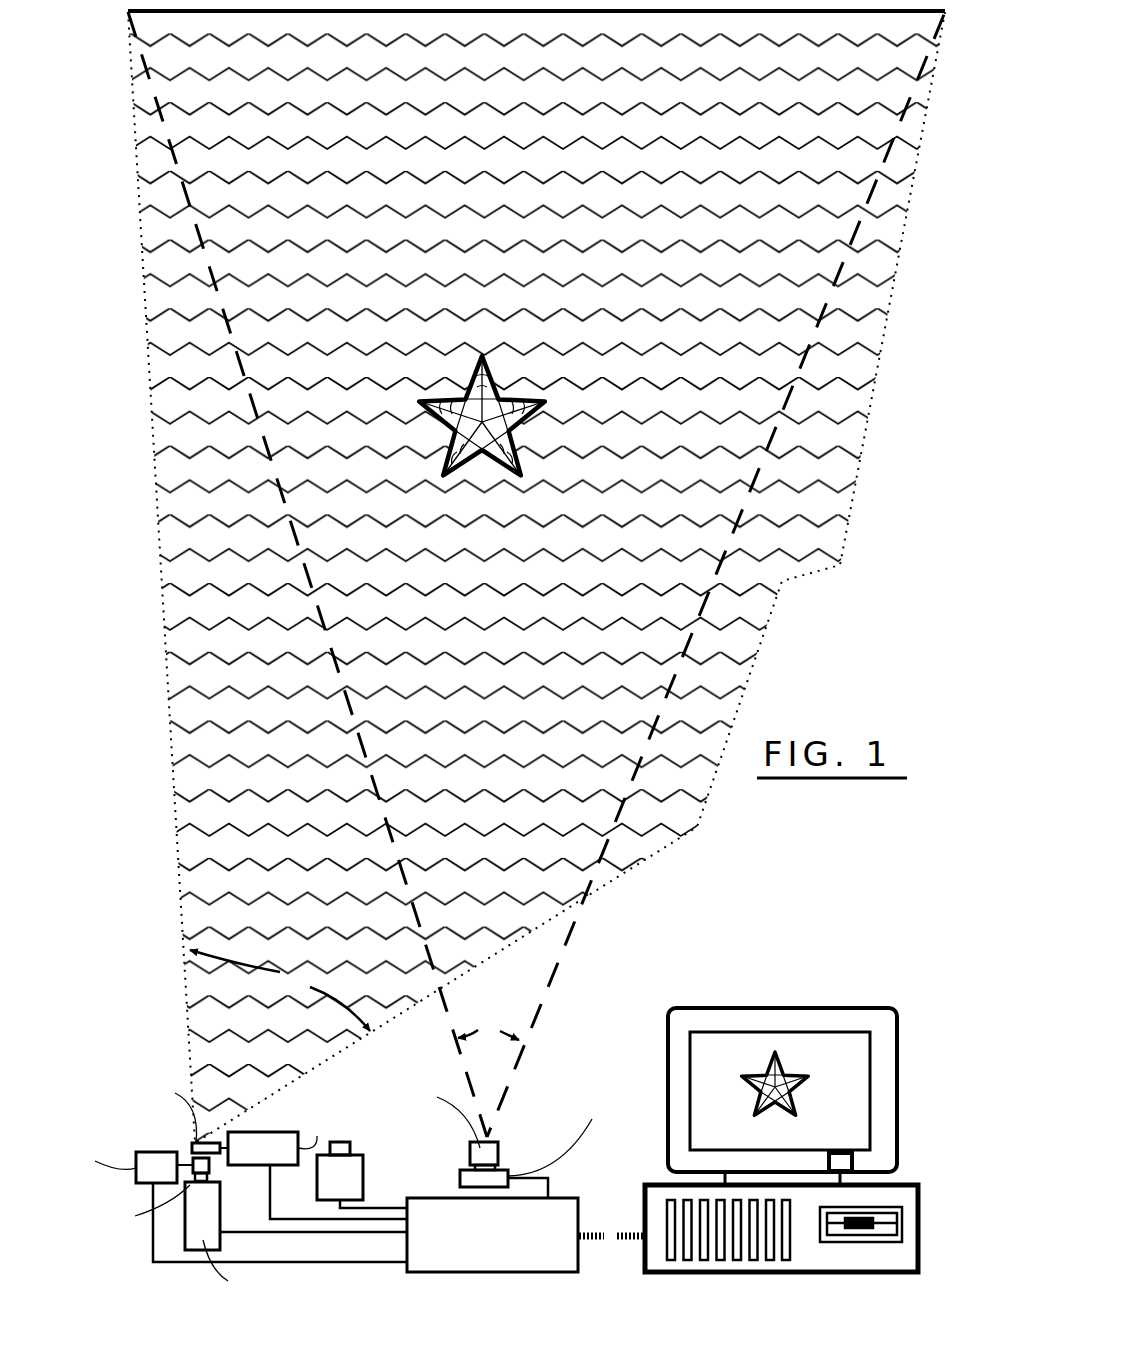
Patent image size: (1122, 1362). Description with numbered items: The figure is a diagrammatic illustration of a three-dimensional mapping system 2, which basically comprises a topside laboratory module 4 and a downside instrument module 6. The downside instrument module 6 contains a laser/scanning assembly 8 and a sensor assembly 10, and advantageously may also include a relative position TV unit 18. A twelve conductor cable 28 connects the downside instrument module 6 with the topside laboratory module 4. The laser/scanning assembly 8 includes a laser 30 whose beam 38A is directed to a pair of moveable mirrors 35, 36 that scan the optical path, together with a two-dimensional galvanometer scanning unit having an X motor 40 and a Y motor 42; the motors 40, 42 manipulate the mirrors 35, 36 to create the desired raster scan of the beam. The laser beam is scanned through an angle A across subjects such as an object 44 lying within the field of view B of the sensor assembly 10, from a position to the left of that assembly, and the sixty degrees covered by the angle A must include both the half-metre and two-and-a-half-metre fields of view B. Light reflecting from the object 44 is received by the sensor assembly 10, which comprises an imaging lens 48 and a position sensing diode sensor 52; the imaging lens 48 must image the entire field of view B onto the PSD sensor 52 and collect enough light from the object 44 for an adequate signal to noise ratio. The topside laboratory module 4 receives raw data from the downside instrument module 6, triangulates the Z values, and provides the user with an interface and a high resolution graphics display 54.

The 3-D mapping system 2 is at (625, 1084).
The topside laboratory module 4 is at (781, 1114).
The downside instrument module 6 is at (419, 1195).
The laser/scanning assembly 8 is at (317, 1155).
The sensor assembly 10 is at (470, 1128).
The relative position TV unit 18 is at (318, 1168).
The twelve conductor cable 28 is at (591, 1231).
The laser 30 is at (167, 1180).
The moveable mirror 35 is at (159, 1181).
The moveable mirror 36 is at (193, 1146).
The beam from laser 38A is at (193, 1163).
The X motor 40 is at (192, 1221).
The Y motor 42 is at (251, 1160).
The object 44 is at (515, 398).
The imaging lens 48 is at (478, 1150).
The position sensing diode (PSD) sensor 52 is at (462, 1185).
The amplifier 54 is at (698, 1017).
The scan angle A is at (280, 990).
The field of view B is at (488, 1032).